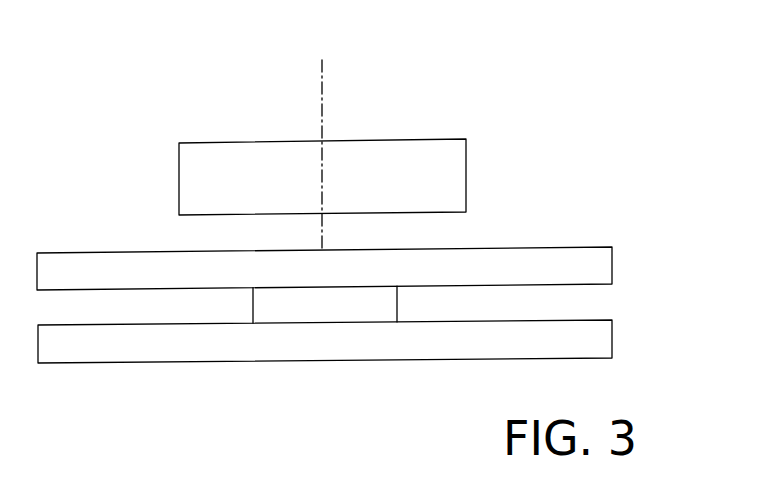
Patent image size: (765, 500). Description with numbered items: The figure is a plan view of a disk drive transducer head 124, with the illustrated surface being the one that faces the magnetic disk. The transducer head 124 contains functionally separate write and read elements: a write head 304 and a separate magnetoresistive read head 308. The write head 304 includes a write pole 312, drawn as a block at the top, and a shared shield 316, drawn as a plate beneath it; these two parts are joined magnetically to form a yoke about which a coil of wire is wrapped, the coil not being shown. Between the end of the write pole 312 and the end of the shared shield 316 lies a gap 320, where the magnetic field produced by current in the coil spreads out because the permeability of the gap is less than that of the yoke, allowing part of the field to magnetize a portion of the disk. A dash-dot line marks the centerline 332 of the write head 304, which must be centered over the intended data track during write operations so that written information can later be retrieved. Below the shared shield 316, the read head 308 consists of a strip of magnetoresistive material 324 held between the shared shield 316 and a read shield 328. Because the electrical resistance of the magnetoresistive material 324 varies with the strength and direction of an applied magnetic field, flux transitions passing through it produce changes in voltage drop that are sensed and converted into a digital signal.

The transducer head 124 is at (341, 22).
The write head 304 is at (384, 153).
The magnetoresistive read head 308 is at (383, 342).
The write pole 312 is at (231, 143).
The shared shield 316 is at (610, 271).
The gap 320 is at (226, 232).
The strip of magnetoresistive material 324 is at (317, 312).
The read shield 328 is at (607, 337).
The centerline 332 is at (322, 107).